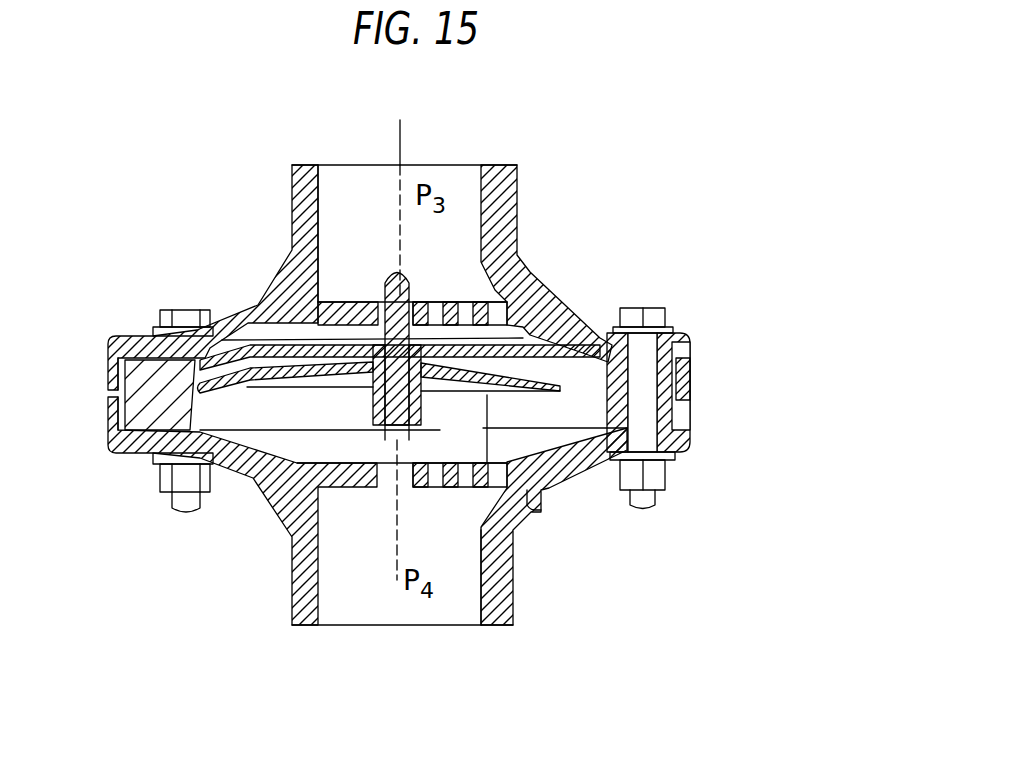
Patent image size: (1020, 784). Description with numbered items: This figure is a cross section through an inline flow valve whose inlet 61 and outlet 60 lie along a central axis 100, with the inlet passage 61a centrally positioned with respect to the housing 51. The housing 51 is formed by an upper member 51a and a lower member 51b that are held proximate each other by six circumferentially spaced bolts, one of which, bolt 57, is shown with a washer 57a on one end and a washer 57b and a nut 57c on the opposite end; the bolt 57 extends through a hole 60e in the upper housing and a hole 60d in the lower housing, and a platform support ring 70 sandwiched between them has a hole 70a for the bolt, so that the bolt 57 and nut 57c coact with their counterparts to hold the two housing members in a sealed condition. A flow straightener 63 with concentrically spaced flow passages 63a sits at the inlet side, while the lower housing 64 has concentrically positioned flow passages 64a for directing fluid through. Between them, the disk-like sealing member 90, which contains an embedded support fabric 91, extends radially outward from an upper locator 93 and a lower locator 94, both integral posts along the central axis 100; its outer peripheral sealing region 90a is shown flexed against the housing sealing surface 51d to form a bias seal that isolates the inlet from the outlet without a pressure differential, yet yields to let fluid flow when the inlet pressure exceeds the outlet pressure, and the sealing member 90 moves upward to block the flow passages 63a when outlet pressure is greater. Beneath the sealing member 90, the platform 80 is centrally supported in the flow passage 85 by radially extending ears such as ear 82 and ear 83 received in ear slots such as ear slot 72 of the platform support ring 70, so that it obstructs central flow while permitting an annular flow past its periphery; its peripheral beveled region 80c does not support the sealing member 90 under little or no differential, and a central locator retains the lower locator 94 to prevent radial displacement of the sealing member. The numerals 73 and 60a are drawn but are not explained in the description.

The central axis 100 is at (399, 136).
The inlet 61 is at (360, 246).
The inlet passage 61a is at (318, 185).
The housing 51 is at (275, 283).
The upper member 51a is at (522, 292).
The lower member 51b is at (598, 400).
The housing sealing surface 51d is at (560, 343).
The support fabric 91 is at (478, 347).
The sealing member 90 is at (280, 337).
The outer peripheral sealing region 90a is at (545, 352).
The flow straightener 63 is at (412, 266).
The flow passages 63a is at (462, 302).
The upper locator 93 is at (390, 277).
The lower locator 94 is at (350, 400).
The platform 80 is at (233, 400).
The peripheral beveled region 80c is at (373, 393).
The flow passage 85 is at (456, 429).
The ear 83 is at (192, 375).
The left bolt 73 is at (190, 400).
The outlet 60 is at (655, 413).
The lower housing 60a is at (317, 590).
The hole 60d is at (677, 430).
The hole 60e is at (647, 348).
The platform support ring 70 is at (665, 418).
The hole 70a is at (660, 388).
The bolt 57 is at (700, 386).
The washer 57a is at (665, 312).
The washer 57b is at (670, 458).
The nut 57c is at (658, 480).
The ear slot 72 is at (513, 583).
The ear 82 is at (547, 487).
The lower housing 64 is at (402, 516).
The flow passages 64a is at (470, 487).